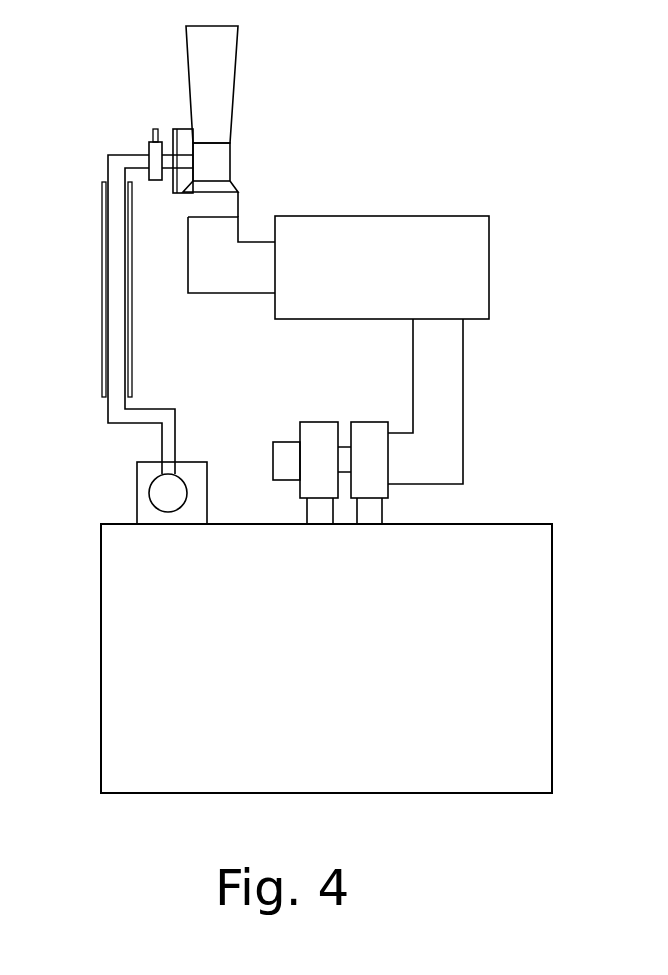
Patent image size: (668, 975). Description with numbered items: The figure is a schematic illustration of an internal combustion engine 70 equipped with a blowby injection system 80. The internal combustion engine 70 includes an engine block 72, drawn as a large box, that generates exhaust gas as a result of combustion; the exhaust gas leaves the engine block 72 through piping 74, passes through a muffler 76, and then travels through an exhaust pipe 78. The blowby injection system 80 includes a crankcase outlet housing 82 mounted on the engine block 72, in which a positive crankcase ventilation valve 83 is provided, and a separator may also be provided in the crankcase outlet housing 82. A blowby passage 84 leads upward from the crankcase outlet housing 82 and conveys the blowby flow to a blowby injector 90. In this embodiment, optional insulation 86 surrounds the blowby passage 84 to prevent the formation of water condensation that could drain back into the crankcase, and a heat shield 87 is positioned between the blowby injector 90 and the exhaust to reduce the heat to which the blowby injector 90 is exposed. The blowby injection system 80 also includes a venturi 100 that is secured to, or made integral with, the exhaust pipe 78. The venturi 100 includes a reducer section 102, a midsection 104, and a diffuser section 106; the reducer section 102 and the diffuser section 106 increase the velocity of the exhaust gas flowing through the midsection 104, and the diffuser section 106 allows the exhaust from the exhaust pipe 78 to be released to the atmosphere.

The internal combustion engine 70 is at (483, 115).
The engine block 72 is at (537, 618).
The piping 74 is at (457, 402).
The muffler 76 is at (472, 255).
The exhaust pipe 78 is at (218, 285).
The blowby injection system 80 is at (144, 306).
The crankcase outlet housing 82 is at (142, 502).
The positive crankcase ventilation valve 83 is at (178, 495).
The blowby passage 84 is at (118, 407).
The insulation 86 is at (102, 215).
The heat shield 87 is at (180, 128).
The blowby injector 90 is at (155, 182).
The venturi 100 is at (269, 121).
The reducer section 102 is at (235, 185).
The midsection 104 is at (233, 165).
The diffuser section 106 is at (232, 85).